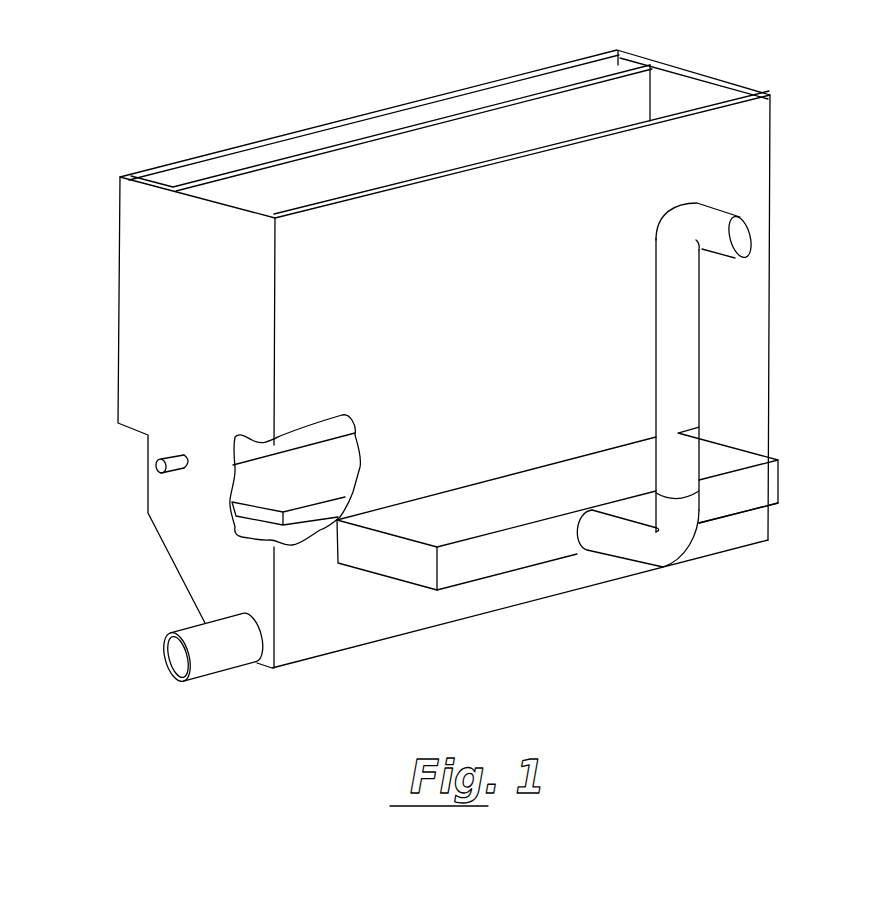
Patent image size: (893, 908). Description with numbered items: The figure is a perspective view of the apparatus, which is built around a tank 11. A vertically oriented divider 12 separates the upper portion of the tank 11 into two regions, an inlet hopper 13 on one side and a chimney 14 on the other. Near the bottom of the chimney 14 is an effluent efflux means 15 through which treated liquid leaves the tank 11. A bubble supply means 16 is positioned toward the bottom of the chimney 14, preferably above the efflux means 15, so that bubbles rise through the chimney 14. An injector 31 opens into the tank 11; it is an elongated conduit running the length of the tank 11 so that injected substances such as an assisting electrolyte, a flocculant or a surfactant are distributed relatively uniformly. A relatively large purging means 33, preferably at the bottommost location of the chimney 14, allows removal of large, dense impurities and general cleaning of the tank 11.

The tank 11 is at (162, 312).
The divider 12 is at (297, 152).
The inlet hopper 13 is at (628, 52).
The chimney 14 is at (710, 72).
The effluent efflux means 15 is at (542, 543).
The bubble supply means 16 is at (286, 488).
The injector 31 is at (158, 470).
The purging means 33 is at (223, 653).